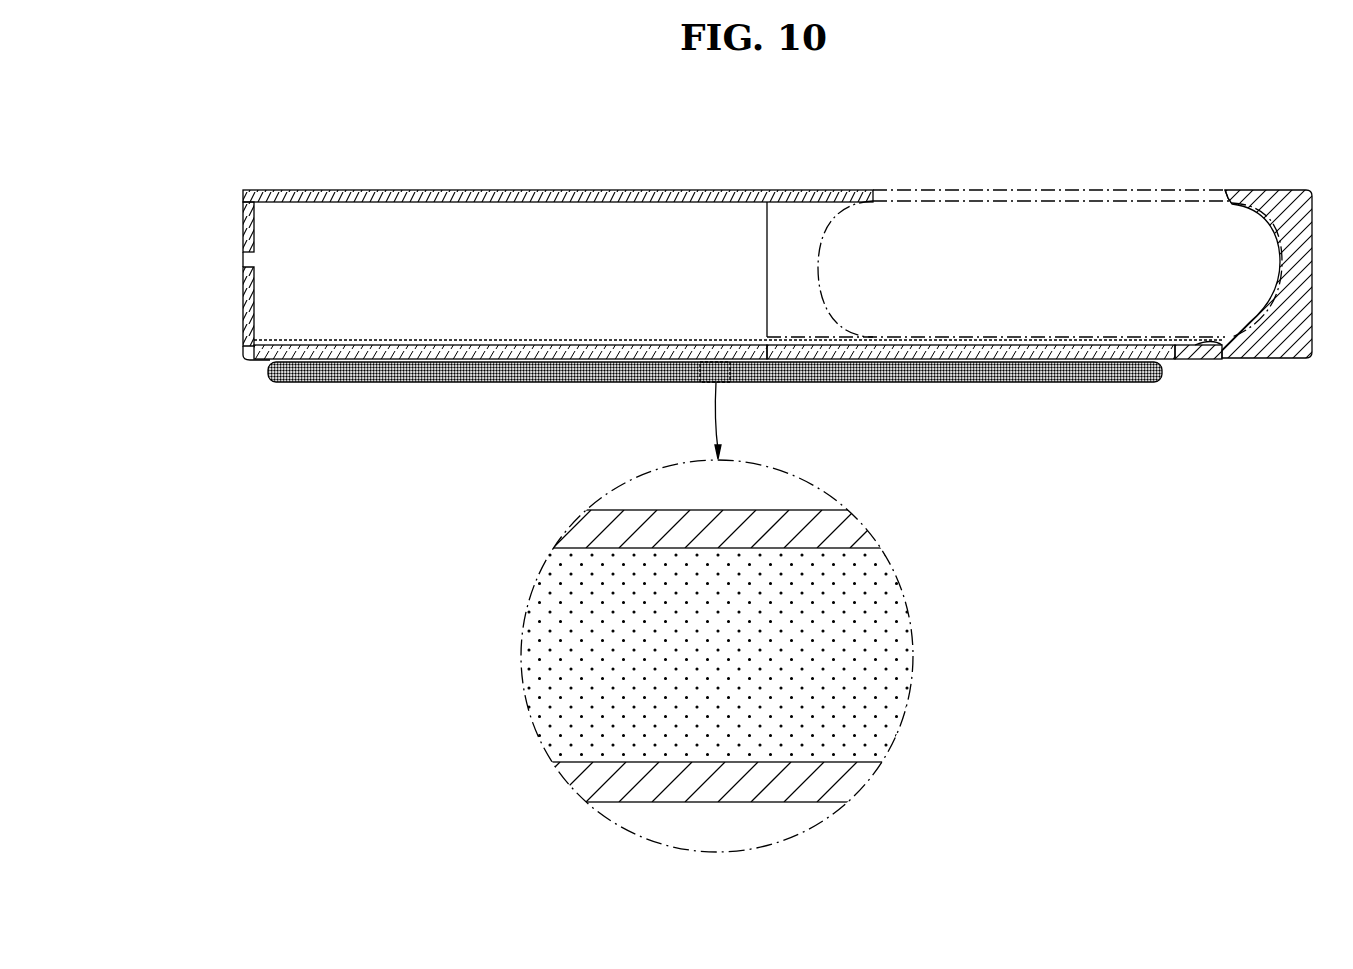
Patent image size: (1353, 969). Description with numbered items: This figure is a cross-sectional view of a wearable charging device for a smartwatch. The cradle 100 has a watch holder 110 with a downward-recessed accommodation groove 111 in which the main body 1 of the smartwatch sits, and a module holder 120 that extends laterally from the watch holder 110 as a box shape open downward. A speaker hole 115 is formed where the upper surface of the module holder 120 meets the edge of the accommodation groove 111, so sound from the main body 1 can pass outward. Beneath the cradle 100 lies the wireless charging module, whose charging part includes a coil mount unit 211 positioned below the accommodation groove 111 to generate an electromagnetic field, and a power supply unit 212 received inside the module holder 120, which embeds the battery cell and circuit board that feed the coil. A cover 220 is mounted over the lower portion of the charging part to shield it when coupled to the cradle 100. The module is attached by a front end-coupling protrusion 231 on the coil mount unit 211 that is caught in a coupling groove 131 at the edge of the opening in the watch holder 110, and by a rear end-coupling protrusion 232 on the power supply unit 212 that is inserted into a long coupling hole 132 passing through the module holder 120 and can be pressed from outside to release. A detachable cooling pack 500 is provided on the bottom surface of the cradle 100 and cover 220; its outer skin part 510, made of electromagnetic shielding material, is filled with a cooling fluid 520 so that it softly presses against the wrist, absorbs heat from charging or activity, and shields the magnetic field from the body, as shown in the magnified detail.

The cradle 100 is at (706, 172).
The main body 1 is at (1046, 190).
The watch holder 110 is at (1288, 192).
The accommodation groove 111 is at (1232, 196).
The speaker hole 115 is at (811, 197).
The module holder 120 is at (567, 191).
The coupling groove 131 is at (1212, 344).
The coupling hole 132 is at (243, 250).
The coil mount unit 211 is at (977, 343).
The power supply unit 212 is at (483, 332).
The cover 220 is at (335, 357).
The front end-coupling protrusion 231 is at (1200, 348).
The rear end-coupling protrusion 232 is at (243, 266).
The cooling pack 500 is at (397, 380).
The outer skin part 510 is at (590, 519).
The cooling fluid 520 is at (545, 652).